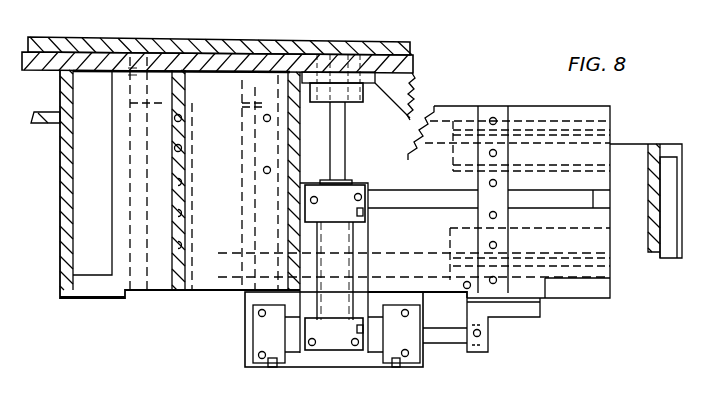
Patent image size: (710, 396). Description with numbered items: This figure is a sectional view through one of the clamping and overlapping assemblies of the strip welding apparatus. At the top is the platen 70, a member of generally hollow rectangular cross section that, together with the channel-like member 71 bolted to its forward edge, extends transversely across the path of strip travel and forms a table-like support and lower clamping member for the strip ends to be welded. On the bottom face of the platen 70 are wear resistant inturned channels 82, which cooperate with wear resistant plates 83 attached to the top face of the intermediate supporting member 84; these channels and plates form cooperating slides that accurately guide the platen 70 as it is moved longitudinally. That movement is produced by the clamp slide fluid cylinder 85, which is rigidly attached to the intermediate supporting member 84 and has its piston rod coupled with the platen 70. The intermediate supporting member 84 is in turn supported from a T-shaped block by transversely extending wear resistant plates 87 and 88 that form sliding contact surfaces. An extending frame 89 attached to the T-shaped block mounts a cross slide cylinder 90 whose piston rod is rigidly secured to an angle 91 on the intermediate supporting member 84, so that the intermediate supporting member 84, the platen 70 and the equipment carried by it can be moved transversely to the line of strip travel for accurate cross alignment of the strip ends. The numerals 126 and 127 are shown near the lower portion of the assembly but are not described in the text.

The platen 70 is at (415, 63).
The channel-like member 71 is at (393, 50).
The wear resistant inturned channels 82 is at (131, 38).
The wear resistant plates 83 is at (183, 38).
The intermediate supporting member 84 is at (300, 294).
The clamp slide fluid cylinder 85 is at (337, 237).
The wear resistant plate 87 is at (616, 278).
The wear resistant plate 88 is at (600, 254).
The extending frame 89 is at (366, 362).
The cross slide cylinder 90 is at (410, 323).
The angle 91 is at (527, 307).
The lower frame member 126 is at (212, 343).
The lower housing 127 is at (107, 346).